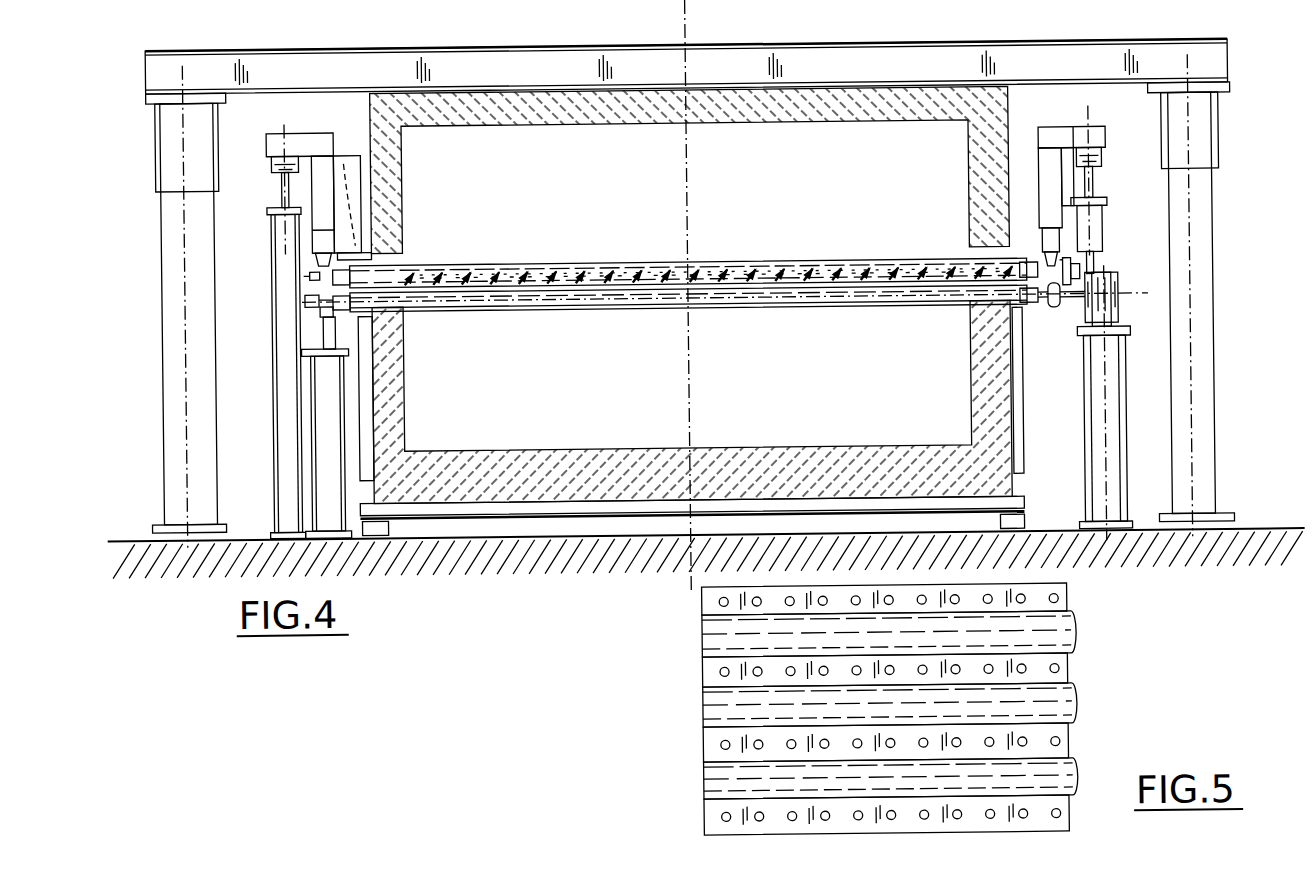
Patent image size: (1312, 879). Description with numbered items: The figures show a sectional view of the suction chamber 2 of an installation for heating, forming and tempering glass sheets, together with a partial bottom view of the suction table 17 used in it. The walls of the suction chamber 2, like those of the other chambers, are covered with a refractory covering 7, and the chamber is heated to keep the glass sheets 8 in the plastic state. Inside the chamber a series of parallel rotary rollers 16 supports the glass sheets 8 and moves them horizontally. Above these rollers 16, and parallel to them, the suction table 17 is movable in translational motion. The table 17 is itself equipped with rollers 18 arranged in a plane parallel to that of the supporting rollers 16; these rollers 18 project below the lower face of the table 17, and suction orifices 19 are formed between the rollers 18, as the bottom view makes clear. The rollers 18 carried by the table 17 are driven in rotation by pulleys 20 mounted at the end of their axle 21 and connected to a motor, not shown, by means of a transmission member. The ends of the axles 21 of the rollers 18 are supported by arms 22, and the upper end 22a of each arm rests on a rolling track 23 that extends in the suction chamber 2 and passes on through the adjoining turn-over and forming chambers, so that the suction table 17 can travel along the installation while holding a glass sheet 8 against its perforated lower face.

In FIG. 4, the suction chamber 2 is at (806, 168).
In FIG. 4, the refractory covering 7 is at (905, 100).
In FIG. 4, the glass sheets 8 is at (617, 286).
In FIG. 4, the rotary rollers 16 is at (470, 302).
In FIG. 4, the suction table 17 is at (779, 254).
In FIG. 5, the suction table 17 is at (872, 709).
In FIG. 4, the rollers 18 is at (865, 263).
In FIG. 5, the rollers 18 is at (1045, 632).
In FIG. 4, the suction orifices 19 is at (668, 273).
In FIG. 5, the suction orifices 19 is at (1066, 598).
In FIG. 4, the pulleys 20 is at (1096, 262).
In FIG. 4, the axle 21 is at (1050, 262).
In FIG. 4, the arms 22 is at (306, 150).
In FIG. 4, the upper end 22a is at (1098, 140).
In FIG. 4, the rolling track 23 is at (284, 172).